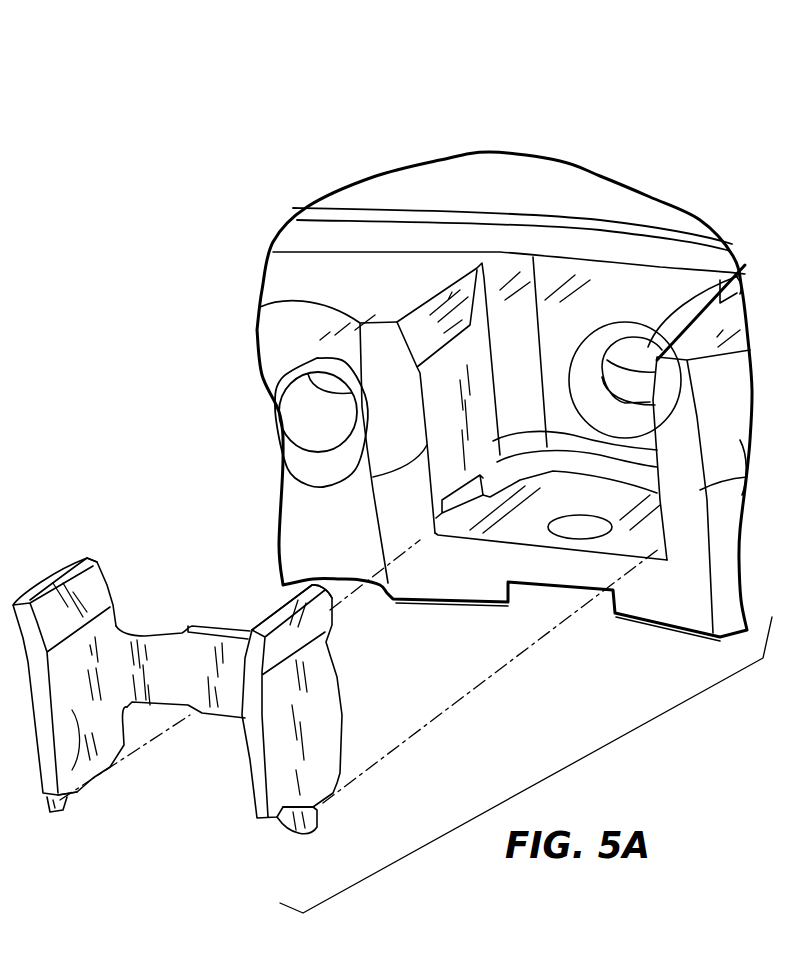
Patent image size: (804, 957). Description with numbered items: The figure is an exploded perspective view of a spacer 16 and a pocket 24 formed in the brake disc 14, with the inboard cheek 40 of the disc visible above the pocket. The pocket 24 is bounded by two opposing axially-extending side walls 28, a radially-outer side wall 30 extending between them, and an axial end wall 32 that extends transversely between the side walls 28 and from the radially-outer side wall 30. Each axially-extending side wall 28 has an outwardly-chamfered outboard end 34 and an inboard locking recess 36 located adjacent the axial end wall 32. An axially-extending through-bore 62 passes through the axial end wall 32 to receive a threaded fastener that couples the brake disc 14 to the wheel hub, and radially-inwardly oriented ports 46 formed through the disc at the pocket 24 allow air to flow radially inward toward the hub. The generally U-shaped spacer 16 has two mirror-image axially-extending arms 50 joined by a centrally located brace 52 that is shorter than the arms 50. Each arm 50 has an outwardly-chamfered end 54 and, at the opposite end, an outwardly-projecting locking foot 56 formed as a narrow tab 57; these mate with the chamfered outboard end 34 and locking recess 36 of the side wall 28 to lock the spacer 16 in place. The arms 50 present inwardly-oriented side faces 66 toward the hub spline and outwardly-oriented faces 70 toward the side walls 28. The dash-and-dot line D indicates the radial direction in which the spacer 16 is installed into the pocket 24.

The inboard cheek 40 is at (516, 176).
The brake disc 14 is at (620, 200).
The radially-outer side wall 30 is at (624, 281).
The pocket 24 is at (690, 291).
The axially-extending side wall 28 is at (373, 476).
The radially-inwardly oriented port 46 is at (290, 393).
The outwardly-chamfered outboard end 34 is at (422, 325).
The inboard locking recess 36 is at (457, 520).
The axial end wall 32 is at (514, 528).
The axially-extending through-bore 62 is at (580, 528).
The dash-and-dot line D is at (503, 667).
The spacer 16 is at (213, 686).
The arm 50 is at (208, 718).
The inwardly-oriented side face 66 is at (91, 689).
The outwardly-oriented face 70 is at (310, 717).
The brace 52 is at (181, 626).
The outwardly-chamfered end 54 is at (80, 582).
The outwardly-projecting locking foot 56 is at (67, 808).
The tab 57 is at (75, 792).